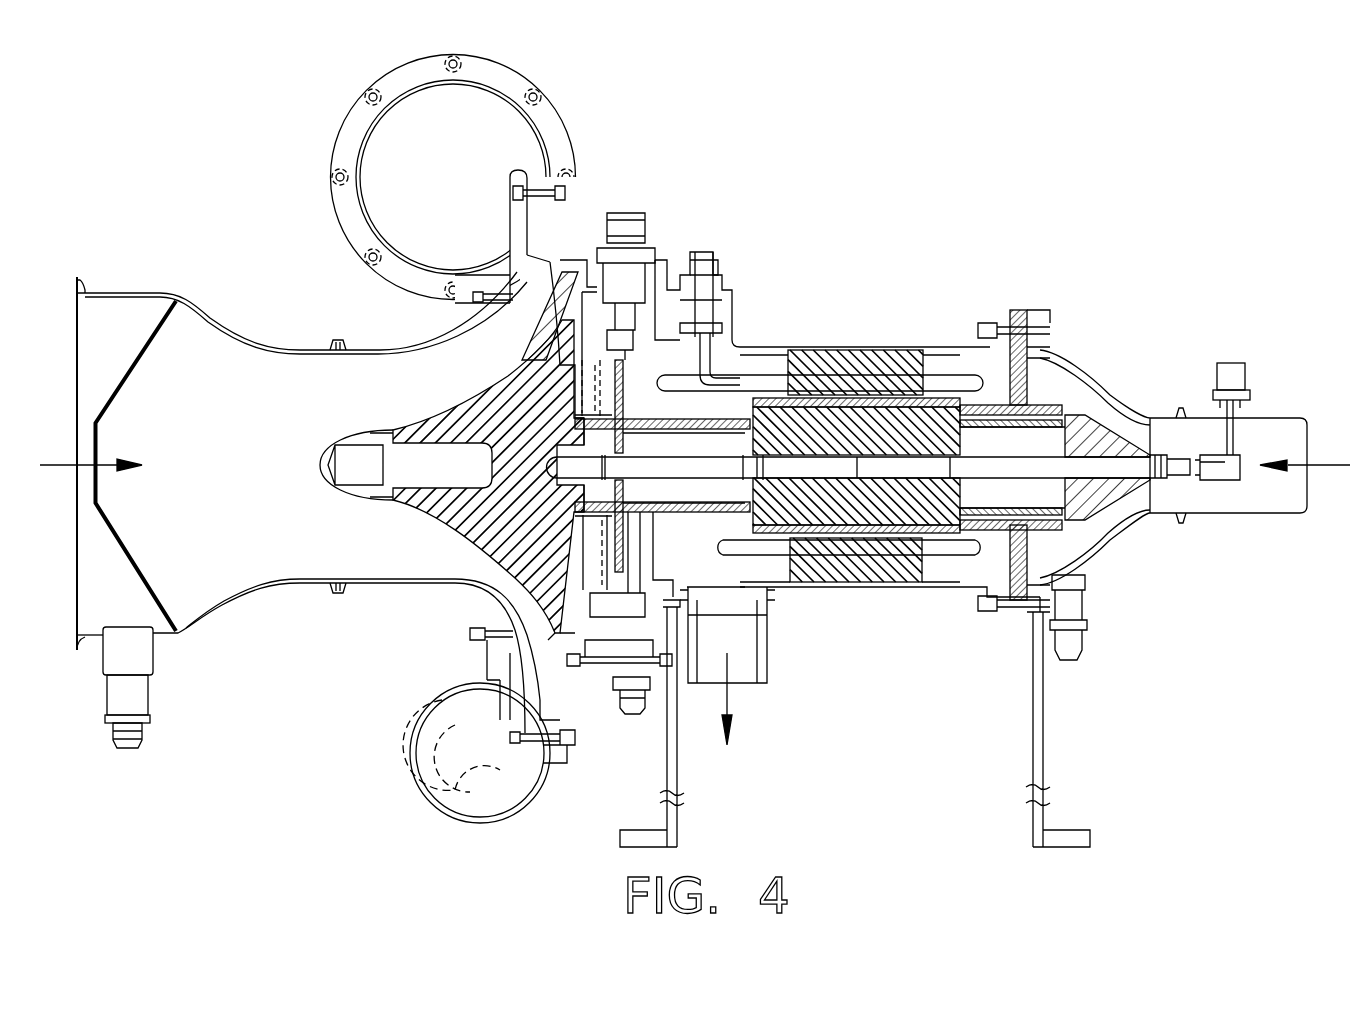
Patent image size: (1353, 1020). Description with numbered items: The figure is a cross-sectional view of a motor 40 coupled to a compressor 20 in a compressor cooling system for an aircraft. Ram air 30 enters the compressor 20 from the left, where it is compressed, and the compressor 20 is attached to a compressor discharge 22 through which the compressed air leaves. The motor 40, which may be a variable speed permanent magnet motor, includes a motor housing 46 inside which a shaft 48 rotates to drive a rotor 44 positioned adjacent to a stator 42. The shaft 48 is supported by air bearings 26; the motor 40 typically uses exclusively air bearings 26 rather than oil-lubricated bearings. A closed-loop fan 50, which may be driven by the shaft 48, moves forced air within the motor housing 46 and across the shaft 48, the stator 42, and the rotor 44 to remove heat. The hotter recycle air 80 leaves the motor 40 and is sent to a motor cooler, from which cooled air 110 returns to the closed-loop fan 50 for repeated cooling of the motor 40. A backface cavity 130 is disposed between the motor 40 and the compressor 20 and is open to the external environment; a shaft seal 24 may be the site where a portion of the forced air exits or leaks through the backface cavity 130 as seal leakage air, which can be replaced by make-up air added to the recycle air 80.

The compressor 20 is at (410, 403).
The compressor discharge 22 is at (343, 112).
The shaft seal 24 is at (573, 527).
The air bearing 26 is at (628, 538).
The ram air 30 is at (106, 460).
The motor 40 is at (778, 303).
The stator 42 is at (817, 350).
The rotor 44 is at (962, 496).
The motor housing 46 is at (885, 592).
The shaft 48 is at (1103, 503).
The closed-loop fan 50 is at (1110, 407).
The recycle air 80 is at (730, 697).
The cooled air 110 is at (1323, 465).
The backface cavity 130 is at (567, 357).